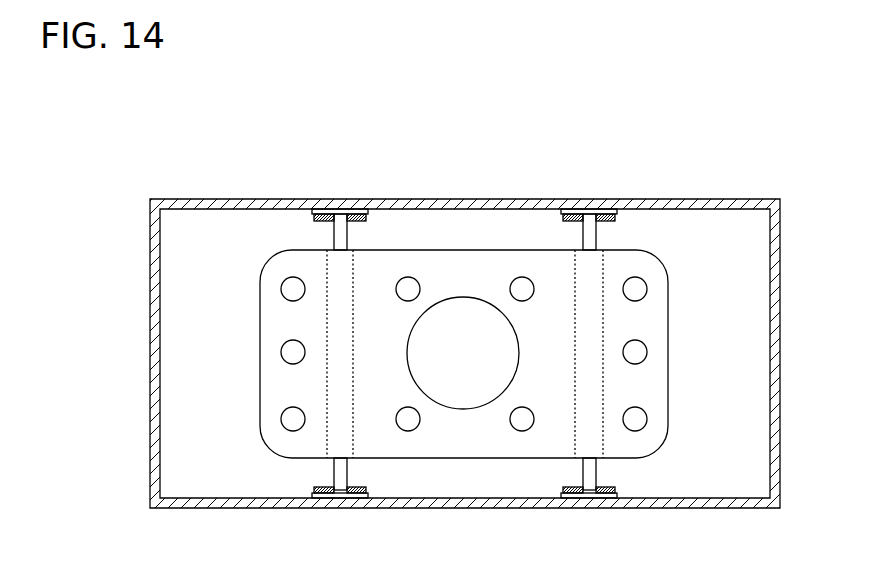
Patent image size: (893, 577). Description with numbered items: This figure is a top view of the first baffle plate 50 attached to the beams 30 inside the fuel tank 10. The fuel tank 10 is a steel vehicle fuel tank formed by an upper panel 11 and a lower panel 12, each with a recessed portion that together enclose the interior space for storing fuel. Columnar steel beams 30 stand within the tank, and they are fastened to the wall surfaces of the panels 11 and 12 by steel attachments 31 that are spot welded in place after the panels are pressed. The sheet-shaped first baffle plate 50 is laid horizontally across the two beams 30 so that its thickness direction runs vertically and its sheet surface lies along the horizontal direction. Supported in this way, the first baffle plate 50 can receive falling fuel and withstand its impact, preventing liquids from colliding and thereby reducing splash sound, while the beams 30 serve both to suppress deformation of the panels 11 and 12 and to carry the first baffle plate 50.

The fuel tank 10 is at (100, 172).
The upper panel 11 is at (150, 349).
The lower panel 12 is at (409, 353).
The beam 30 is at (334, 234).
The attachment 31 is at (368, 215).
The first baffle plate 50 is at (260, 400).